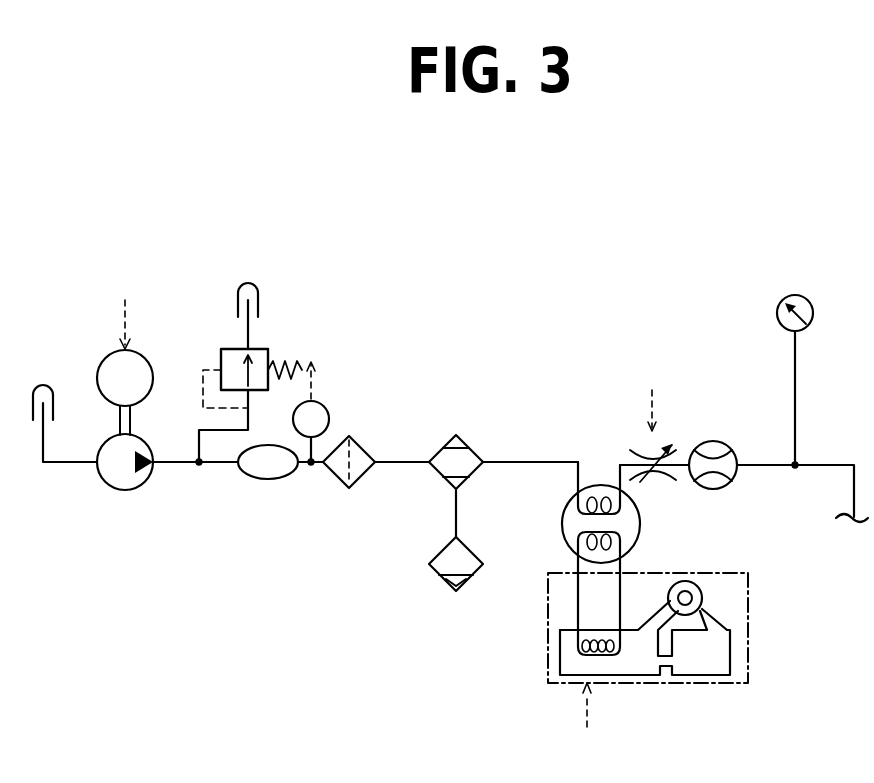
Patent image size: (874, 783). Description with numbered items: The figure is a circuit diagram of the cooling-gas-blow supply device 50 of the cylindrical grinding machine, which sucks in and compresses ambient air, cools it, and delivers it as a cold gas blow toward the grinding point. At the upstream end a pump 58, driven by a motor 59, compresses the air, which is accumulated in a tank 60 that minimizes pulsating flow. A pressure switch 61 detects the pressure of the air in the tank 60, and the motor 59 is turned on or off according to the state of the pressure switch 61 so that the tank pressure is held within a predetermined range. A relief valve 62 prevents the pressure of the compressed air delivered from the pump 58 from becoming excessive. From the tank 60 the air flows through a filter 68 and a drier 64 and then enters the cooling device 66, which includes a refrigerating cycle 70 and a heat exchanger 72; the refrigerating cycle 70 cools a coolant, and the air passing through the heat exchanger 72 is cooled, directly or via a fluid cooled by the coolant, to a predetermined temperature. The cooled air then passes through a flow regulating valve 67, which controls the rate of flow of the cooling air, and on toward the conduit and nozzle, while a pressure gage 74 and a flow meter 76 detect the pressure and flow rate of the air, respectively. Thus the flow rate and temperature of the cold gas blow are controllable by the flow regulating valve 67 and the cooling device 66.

The cooling-gas-blow supply device 50 is at (562, 278).
The pump 58 is at (124, 481).
The motor 59 is at (138, 352).
The tank 60 is at (265, 480).
The pressure switch 61 is at (325, 408).
The relief valve 62 is at (270, 352).
The drier 64 is at (468, 450).
The cooling device 66 is at (445, 623).
The flow regulating valve 67 is at (645, 453).
The filter 68 is at (363, 450).
The refrigerating cycle 70 is at (548, 640).
The heat exchanger 72 is at (563, 533).
The pressure gage 74 is at (814, 308).
The flow meter 76 is at (714, 441).